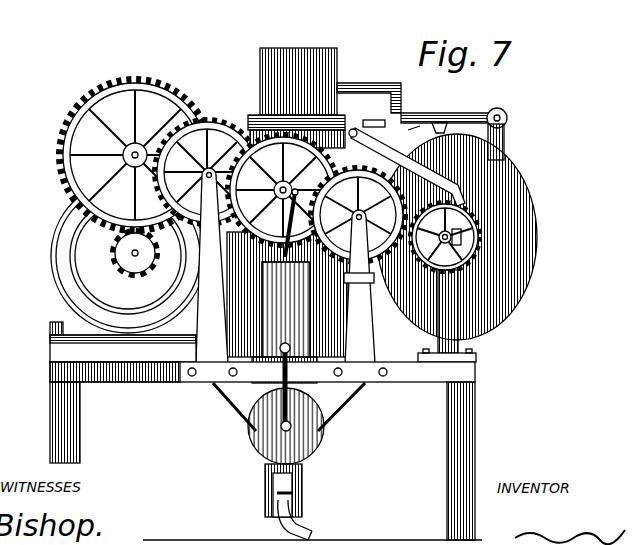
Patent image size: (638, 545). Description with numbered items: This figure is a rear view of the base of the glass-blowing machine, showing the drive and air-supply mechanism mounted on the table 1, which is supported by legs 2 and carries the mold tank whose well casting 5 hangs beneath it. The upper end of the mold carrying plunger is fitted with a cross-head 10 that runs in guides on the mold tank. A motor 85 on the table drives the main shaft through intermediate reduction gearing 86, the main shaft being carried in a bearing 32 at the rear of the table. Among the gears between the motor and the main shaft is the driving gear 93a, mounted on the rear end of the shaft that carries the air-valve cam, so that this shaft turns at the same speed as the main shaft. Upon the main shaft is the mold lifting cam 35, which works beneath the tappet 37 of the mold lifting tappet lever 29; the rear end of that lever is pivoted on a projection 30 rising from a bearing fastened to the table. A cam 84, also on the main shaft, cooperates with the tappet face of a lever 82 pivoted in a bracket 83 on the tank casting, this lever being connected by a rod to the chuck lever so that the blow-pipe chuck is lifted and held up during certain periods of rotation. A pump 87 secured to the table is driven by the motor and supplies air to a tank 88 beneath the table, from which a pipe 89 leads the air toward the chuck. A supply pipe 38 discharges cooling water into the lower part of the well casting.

The table 1 is at (146, 373).
The legs 2 is at (53, 416).
The well casting 5 is at (304, 486).
The cross-head 10 is at (273, 78).
The mold lifting tappet lever 29 is at (407, 130).
The projection 30 is at (506, 117).
The bearing 32 is at (450, 307).
The mold lifting cam 35 is at (530, 200).
The tappet 37 is at (440, 131).
The supply pipe 38 is at (302, 523).
The lever 82 is at (347, 87).
The bracket 83 is at (355, 131).
The cam 84 is at (445, 237).
The motor 85 is at (52, 230).
The reduction gearing 86 is at (180, 78).
The pump 87 is at (272, 325).
The tank 88 is at (258, 432).
The pipe 89 is at (292, 418).
The driving gear 93a is at (447, 114).